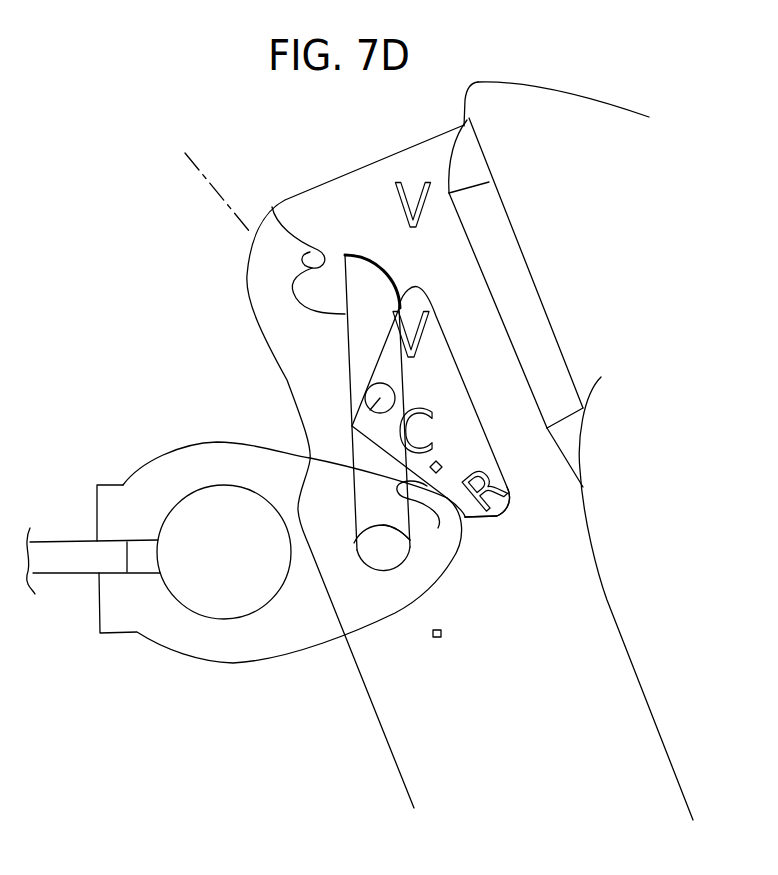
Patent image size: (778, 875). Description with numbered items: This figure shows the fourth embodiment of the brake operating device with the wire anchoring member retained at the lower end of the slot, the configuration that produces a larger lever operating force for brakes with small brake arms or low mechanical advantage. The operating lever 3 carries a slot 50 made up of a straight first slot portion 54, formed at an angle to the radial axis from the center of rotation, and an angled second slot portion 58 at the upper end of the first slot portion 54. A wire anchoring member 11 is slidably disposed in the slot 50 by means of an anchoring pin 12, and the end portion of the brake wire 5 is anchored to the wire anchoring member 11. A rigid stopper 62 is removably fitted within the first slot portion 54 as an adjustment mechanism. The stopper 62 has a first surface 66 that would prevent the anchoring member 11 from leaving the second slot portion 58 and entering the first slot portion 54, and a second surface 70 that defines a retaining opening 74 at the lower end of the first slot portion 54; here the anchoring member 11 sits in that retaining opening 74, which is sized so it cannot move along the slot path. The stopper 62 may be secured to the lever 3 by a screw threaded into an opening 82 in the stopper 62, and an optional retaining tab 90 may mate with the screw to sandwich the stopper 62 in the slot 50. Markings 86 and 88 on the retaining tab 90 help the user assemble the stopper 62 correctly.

The operating lever 3 is at (538, 118).
The brake wire 5 is at (60, 537).
The wire anchoring member 11 is at (173, 467).
The anchoring pin 12 is at (395, 553).
The slot 50 is at (352, 426).
The first slot portion 54 is at (426, 518).
The second slot portion 58 is at (272, 207).
The stopper 62 is at (388, 290).
The first surface 66 is at (344, 316).
The second surface 70 is at (394, 553).
The retaining opening 74 is at (382, 557).
The opening 82 is at (352, 427).
The marking 86 is at (430, 327).
The marking 88 is at (505, 497).
The retaining tab 90 is at (477, 443).